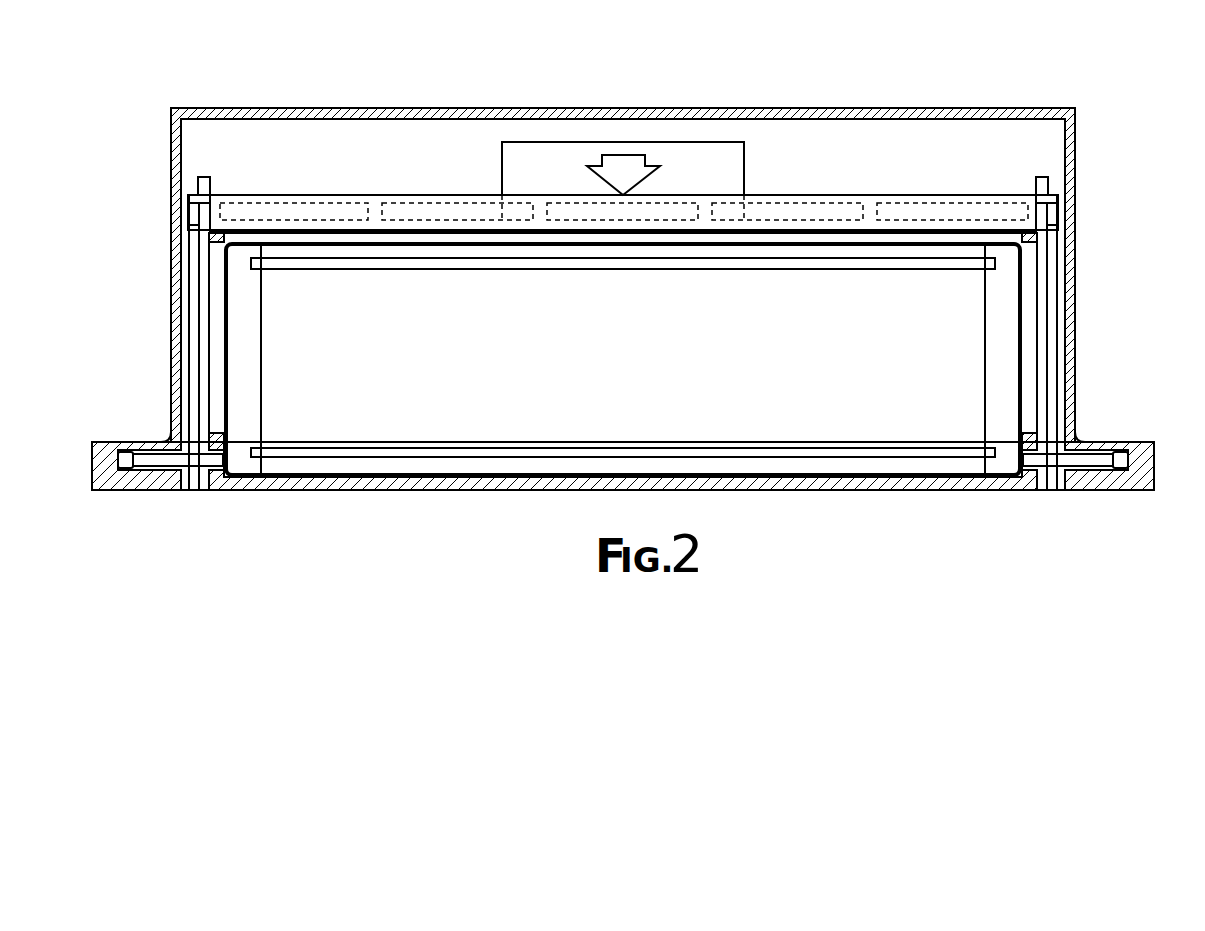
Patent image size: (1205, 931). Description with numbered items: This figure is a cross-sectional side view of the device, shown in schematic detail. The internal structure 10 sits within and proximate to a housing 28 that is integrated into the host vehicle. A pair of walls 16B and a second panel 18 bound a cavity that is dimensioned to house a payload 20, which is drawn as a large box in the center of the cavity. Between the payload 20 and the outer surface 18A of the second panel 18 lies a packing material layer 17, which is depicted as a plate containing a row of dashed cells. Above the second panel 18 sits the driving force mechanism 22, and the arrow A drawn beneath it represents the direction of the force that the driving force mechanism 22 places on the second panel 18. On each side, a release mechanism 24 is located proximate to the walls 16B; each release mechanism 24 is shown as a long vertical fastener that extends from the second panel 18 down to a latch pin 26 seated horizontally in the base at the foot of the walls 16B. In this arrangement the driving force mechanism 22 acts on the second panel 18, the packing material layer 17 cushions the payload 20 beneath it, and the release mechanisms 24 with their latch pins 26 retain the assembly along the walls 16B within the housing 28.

The internal structure 10 is at (334, 58).
The walls 16B is at (170, 372).
The packing material layer 17 is at (347, 238).
The second panel 18 is at (847, 207).
The outer surface 18A is at (838, 233).
The payload 20 is at (632, 375).
The driving force mechanism 22 is at (697, 163).
The release mechanism 24 is at (202, 317).
The latch pins 26 is at (150, 462).
The housing 28 is at (843, 110).
The arrow A is at (625, 166).